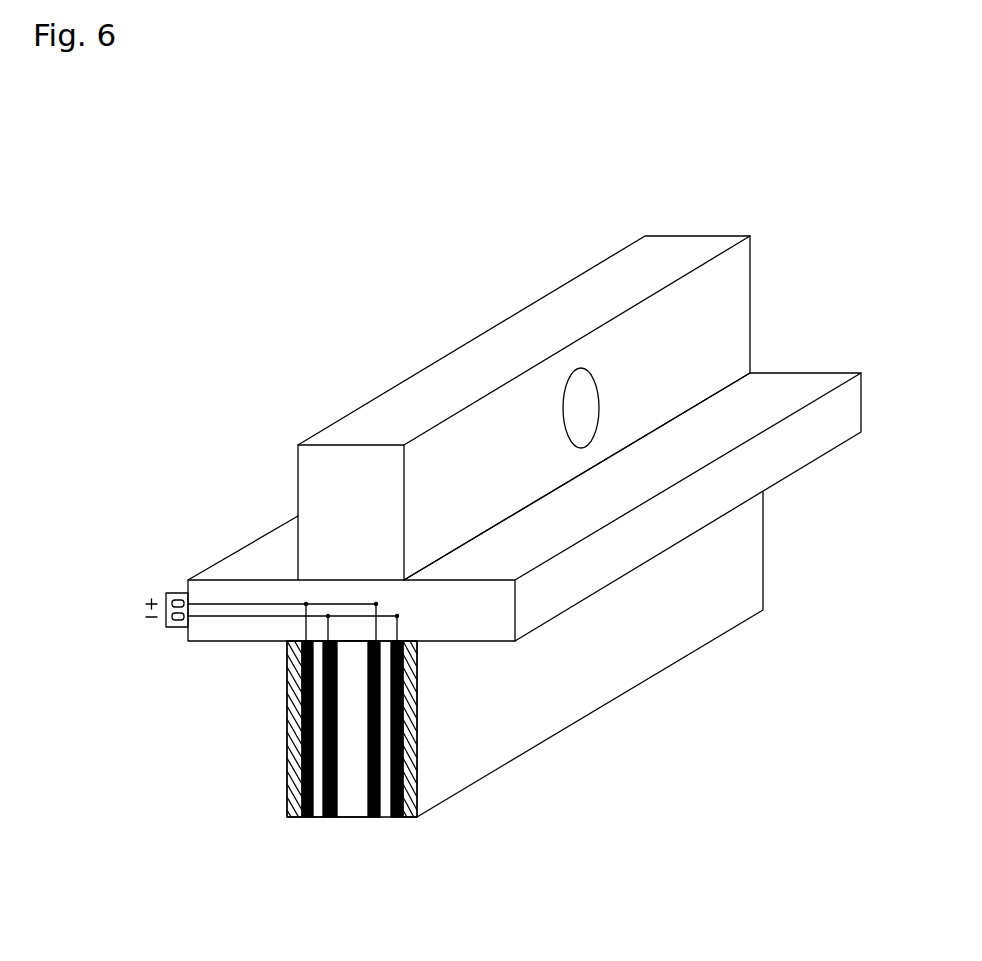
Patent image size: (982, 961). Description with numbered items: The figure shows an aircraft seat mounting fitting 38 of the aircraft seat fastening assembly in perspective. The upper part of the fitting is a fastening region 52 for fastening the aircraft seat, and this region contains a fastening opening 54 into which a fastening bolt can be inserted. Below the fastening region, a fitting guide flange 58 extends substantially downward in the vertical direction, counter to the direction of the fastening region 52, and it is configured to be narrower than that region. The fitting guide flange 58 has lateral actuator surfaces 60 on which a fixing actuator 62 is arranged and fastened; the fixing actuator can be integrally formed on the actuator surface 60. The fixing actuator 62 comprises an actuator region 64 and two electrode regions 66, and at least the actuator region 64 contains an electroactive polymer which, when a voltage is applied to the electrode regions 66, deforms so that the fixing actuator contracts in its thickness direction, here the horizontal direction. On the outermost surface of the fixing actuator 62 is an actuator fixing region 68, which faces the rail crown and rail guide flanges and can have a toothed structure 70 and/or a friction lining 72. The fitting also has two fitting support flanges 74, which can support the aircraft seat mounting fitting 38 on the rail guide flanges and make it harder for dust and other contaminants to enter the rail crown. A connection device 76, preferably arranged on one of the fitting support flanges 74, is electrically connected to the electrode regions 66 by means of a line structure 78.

The aircraft seat mounting fitting 38 is at (352, 180).
The fastening region 52 is at (548, 280).
The fastening opening 54 is at (586, 409).
The fitting guide flange 58 is at (352, 793).
The actuator surface 60 is at (367, 668).
The fixing actuator 62 is at (307, 822).
The actuator region 64 is at (317, 820).
The electrode region 66 is at (300, 753).
The actuator fixing region 68 is at (287, 693).
The toothed structure 70 is at (618, 676).
The friction lining 72 is at (675, 637).
The fitting support flange 74 is at (240, 591).
The connection device 76 is at (175, 590).
The line structure 78 is at (308, 598).